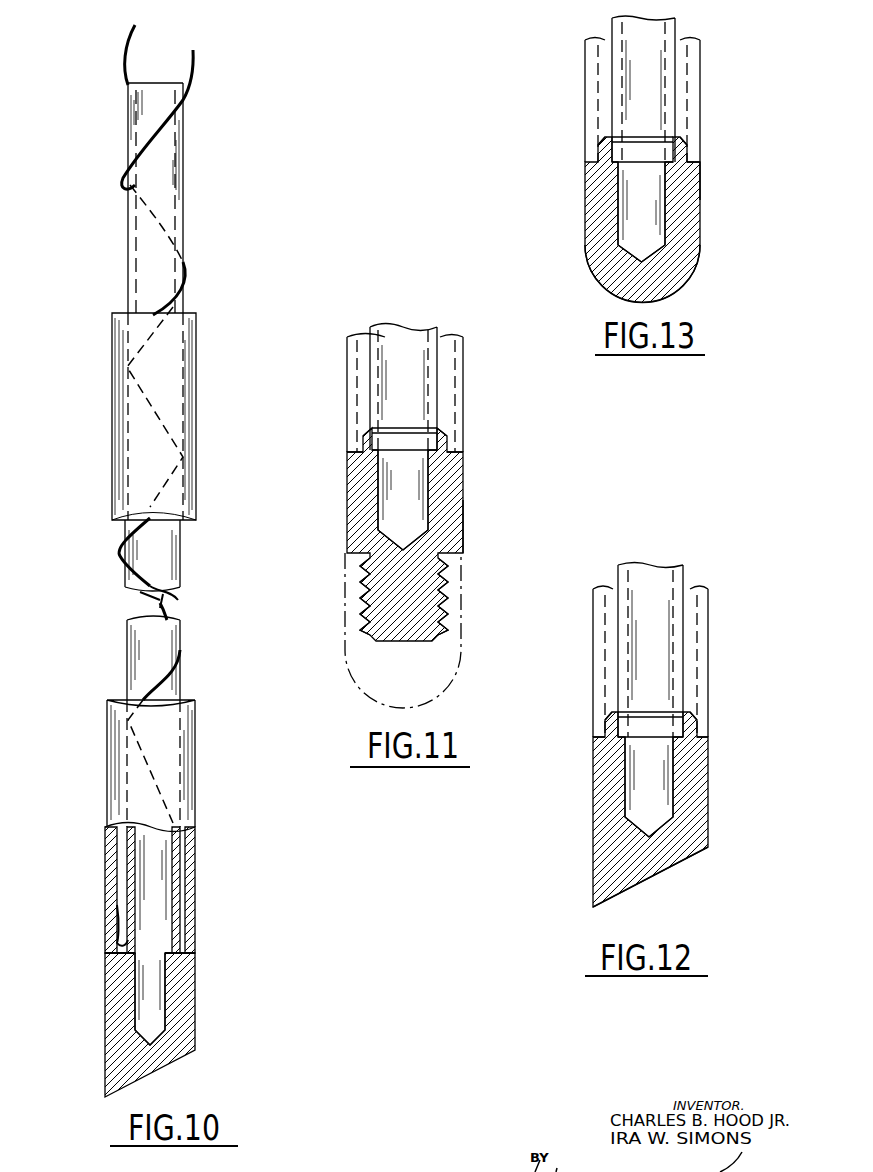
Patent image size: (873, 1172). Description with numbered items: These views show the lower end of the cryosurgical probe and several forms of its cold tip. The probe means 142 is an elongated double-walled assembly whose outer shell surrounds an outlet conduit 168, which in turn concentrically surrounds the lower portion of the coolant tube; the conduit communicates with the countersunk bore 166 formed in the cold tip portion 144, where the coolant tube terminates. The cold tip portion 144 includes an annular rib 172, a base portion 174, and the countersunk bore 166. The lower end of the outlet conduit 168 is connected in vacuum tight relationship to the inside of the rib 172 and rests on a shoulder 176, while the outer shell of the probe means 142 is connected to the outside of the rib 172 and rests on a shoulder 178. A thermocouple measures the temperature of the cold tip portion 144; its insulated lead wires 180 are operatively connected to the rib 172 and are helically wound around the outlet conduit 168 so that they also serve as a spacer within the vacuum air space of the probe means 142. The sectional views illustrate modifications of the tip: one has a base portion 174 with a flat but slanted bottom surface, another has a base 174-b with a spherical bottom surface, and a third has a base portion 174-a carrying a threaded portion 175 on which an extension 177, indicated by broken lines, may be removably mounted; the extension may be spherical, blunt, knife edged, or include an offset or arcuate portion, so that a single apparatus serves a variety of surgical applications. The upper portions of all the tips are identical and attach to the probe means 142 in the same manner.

In FIG. 10, the probe means 142 is at (112, 425).
In FIG. 11, the probe means 142 is at (405, 393).
In FIG. 12, the probe means 142 is at (650, 661).
In FIG. 13, the probe means 142 is at (642, 100).
In FIG. 10, the cold tip portion 144 is at (197, 1038).
In FIG. 11, the cold tip portion 144 is at (345, 503).
In FIG. 12, the cold tip portion 144 is at (650, 809).
In FIG. 13, the cold tip portion 144 is at (583, 210).
In FIG. 10, the countersunk bore 166 is at (155, 1013).
In FIG. 11, the countersunk bore 166 is at (412, 500).
In FIG. 12, the countersunk bore 166 is at (648, 795).
In FIG. 13, the countersunk bore 166 is at (648, 175).
In FIG. 10, the outlet conduit 168 is at (160, 567).
In FIG. 11, the outlet conduit 168 is at (403, 387).
In FIG. 12, the outlet conduit 168 is at (650, 650).
In FIG. 13, the outlet conduit 168 is at (643, 89).
In FIG. 10, the annular rib 172 is at (110, 957).
In FIG. 11, the annular rib 172 is at (440, 430).
In FIG. 12, the annular rib 172 is at (695, 712).
In FIG. 13, the annular rib 172 is at (680, 145).
In FIG. 12, the base portion 174 is at (685, 820).
In FIG. 11, the base portion 174-a is at (463, 515).
In FIG. 13, the base 174-b is at (670, 275).
In FIG. 11, the threaded portion 175 is at (420, 600).
In FIG. 11, the shoulder 176 is at (365, 455).
In FIG. 12, the shoulder 176 is at (593, 760).
In FIG. 13, the shoulder 176 is at (700, 195).
In FIG. 11, the extension 177 is at (450, 675).
In FIG. 11, the shoulder 178 is at (348, 448).
In FIG. 12, the shoulder 178 is at (600, 738).
In FIG. 13, the shoulder 178 is at (695, 160).
In FIG. 10, the lead wires 180 is at (120, 60).